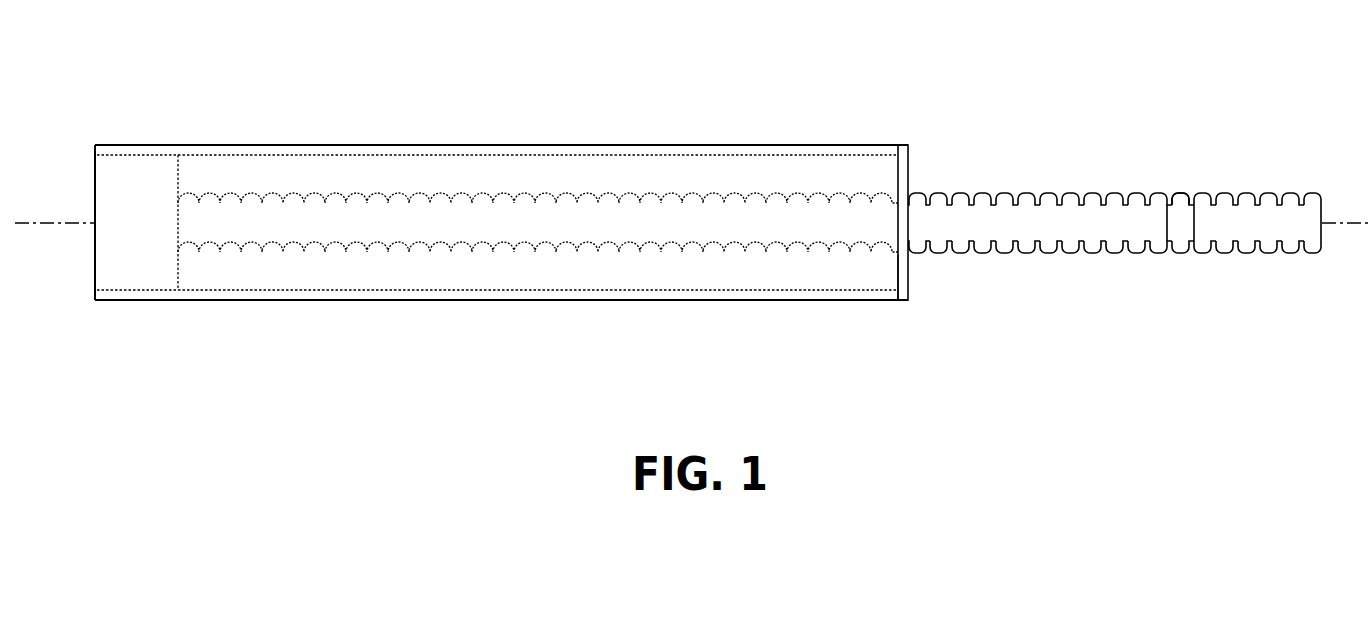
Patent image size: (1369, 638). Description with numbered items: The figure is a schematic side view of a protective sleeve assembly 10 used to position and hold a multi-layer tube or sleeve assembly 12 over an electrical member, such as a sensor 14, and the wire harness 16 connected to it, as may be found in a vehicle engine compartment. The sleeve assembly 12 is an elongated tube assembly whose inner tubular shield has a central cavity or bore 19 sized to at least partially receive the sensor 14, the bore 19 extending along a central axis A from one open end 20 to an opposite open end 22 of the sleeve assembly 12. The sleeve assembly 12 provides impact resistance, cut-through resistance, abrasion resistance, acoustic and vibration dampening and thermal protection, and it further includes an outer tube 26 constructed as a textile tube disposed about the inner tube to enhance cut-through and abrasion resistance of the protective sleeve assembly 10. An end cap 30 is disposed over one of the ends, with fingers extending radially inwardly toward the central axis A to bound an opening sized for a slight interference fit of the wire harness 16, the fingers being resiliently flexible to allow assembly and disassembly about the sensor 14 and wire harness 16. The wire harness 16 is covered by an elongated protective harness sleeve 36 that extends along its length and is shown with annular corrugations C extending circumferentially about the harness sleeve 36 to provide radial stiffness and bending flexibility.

The protective sleeve assembly 10 is at (535, 95).
The sleeve assembly 12 is at (659, 143).
The sensor 14 is at (146, 168).
The wire harness 16 is at (1177, 193).
The bore 19 is at (320, 170).
The open end 20 is at (900, 272).
The open end 22 is at (95, 283).
The outer tube 26 is at (843, 128).
The end cap 30 is at (908, 168).
The harness sleeve 36 is at (1034, 189).
The central axis A is at (1325, 223).
The annular corrugations C is at (1190, 254).